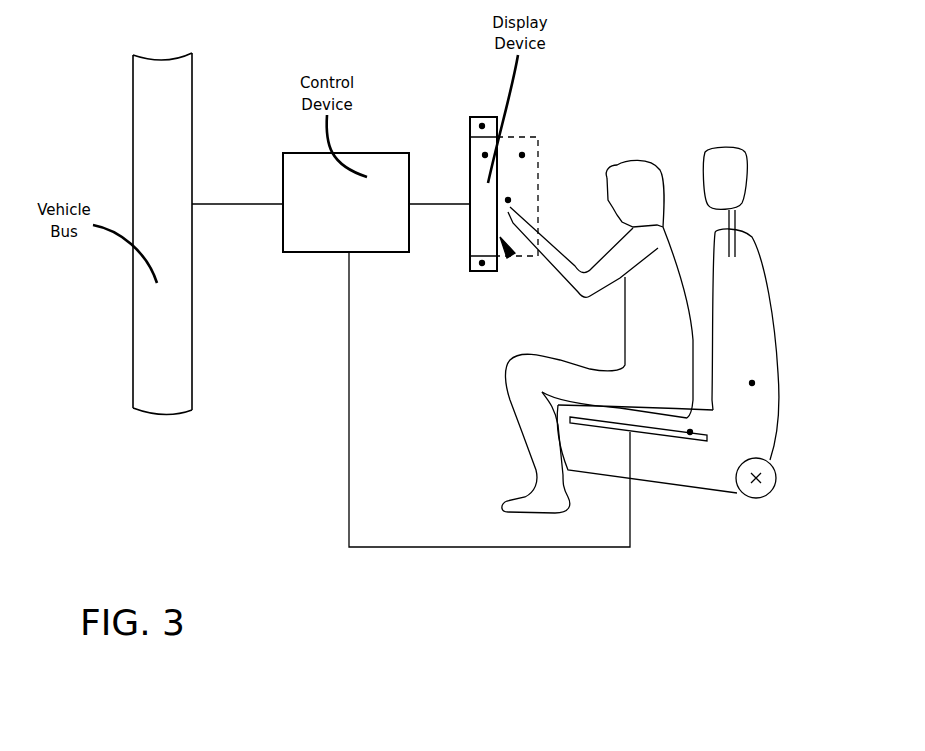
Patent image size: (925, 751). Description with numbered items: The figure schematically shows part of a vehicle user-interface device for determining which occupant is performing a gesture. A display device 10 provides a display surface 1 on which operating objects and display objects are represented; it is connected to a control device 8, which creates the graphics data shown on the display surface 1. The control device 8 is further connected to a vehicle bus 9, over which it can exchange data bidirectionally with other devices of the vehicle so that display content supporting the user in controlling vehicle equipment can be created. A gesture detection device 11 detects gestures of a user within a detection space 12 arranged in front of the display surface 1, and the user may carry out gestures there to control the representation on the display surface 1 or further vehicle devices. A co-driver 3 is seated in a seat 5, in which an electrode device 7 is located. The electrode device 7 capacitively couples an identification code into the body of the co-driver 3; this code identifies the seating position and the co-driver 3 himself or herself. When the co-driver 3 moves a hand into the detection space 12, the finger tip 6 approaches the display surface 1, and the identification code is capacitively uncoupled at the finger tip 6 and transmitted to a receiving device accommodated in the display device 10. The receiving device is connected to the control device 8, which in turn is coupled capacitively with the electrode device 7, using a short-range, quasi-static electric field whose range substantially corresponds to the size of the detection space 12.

The display surface 1 is at (514, 256).
The co-driver 3 is at (662, 325).
The seat 5 is at (753, 383).
The finger tip 6 is at (509, 199).
The electrode device 7 is at (691, 433).
The control device 8 is at (356, 215).
The vehicle bus 9 is at (162, 234).
The display device 10 is at (486, 154).
The gesture detection device 11 is at (482, 264).
The detection space 12 is at (523, 154).